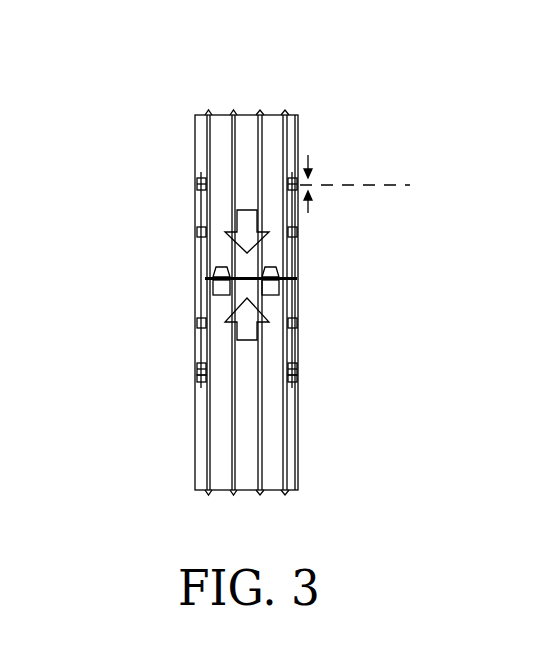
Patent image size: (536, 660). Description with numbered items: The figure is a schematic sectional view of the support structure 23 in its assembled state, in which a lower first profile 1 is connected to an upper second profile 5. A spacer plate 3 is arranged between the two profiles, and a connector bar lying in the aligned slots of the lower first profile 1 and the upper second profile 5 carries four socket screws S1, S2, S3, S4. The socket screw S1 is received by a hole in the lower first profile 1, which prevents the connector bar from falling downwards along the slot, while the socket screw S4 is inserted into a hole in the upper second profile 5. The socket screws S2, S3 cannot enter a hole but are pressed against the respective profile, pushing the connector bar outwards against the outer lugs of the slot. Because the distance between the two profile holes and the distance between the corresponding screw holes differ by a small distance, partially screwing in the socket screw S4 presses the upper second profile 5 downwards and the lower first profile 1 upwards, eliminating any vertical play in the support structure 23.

The support structure 23 is at (113, 117).
The upper second profile 5 is at (297, 133).
The lower first profile 1 is at (298, 467).
The spacer plate 3 is at (247, 277).
The socket screw S1 is at (198, 369).
The socket screw S2 is at (198, 324).
The socket screw S3 is at (198, 232).
The socket screw S4 is at (198, 182).